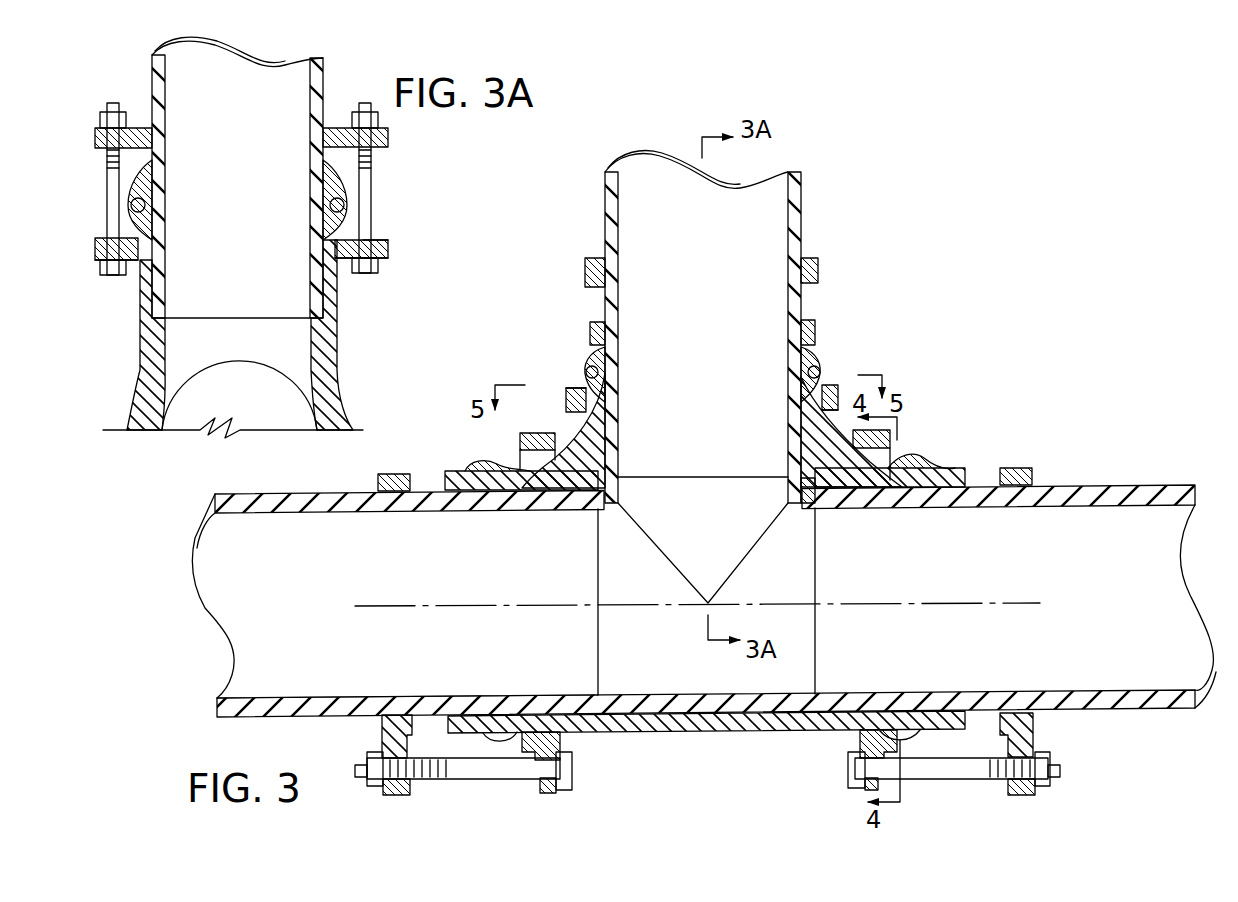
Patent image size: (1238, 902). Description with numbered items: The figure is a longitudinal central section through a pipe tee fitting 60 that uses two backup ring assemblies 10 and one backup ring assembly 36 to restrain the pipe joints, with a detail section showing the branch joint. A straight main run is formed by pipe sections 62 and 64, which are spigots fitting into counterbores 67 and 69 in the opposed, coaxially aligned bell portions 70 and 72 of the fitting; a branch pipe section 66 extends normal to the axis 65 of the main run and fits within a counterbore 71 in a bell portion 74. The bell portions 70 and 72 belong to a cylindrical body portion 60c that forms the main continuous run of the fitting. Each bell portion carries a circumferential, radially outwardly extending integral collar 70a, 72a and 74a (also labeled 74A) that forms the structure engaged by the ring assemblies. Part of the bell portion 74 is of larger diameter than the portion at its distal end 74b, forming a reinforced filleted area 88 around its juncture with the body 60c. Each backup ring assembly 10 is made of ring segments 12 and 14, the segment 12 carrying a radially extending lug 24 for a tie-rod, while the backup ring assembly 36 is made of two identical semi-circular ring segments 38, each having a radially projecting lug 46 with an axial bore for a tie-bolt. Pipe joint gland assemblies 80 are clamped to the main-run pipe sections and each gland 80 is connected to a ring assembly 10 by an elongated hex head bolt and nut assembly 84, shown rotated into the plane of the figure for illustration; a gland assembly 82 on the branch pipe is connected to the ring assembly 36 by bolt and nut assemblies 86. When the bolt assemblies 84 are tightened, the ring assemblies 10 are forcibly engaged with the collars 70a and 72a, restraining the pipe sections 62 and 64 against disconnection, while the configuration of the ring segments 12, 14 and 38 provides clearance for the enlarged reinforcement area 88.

In FIG. 3, the backup ring assembly 10 is at (713, 795).
In FIG. 3, the ring segment 12 is at (518, 446).
In FIG. 3, the ring segment 14 is at (565, 742).
In FIG. 3, the lug 24 is at (548, 792).
In FIG. 3, the backup ring assembly 36 is at (833, 383).
In FIG. 3A, the backup ring assembly 36 is at (95, 282).
In FIG. 3, the ring segment 38 is at (574, 388).
In FIG. 3A, the ring segment 38 is at (95, 265).
In FIG. 3A, the lug 46 is at (385, 242).
In FIG. 3, the tee fitting 60 is at (705, 581).
In FIG. 3A, the tee fitting 60 is at (200, 370).
In FIG. 3, the cylindrical body portion 60c is at (735, 738).
In FIG. 3A, the cylindrical body portion 60c is at (130, 404).
In FIG. 3, the pipe section 62 is at (255, 717).
In FIG. 3, the pipe section 64 is at (1110, 486).
In FIG. 3, the axis 65 is at (385, 606).
In FIG. 3A, the axis 65 is at (238, 432).
In FIG. 3, the pipe section 66 is at (802, 228).
In FIG. 3A, the pipe section 66 is at (325, 70).
In FIG. 3, the counterbore 67 is at (592, 505).
In FIG. 3, the counterbore 69 is at (845, 488).
In FIG. 3, the bell portion 70 is at (448, 478).
In FIG. 3, the collar 70a is at (468, 495).
In FIG. 3, the counterbore 71 is at (618, 434).
In FIG. 3A, the counterbore 71 is at (165, 292).
In FIG. 3, the bell portion 72 is at (935, 468).
In FIG. 3, the collar 72a is at (888, 490).
In FIG. 3, the bell portion 74 is at (590, 332).
In FIG. 3A, the bell portion 74 is at (340, 196).
In FIG. 3, the collar 74A is at (606, 335).
In FIG. 3, the collar 74a is at (815, 345).
In FIG. 3A, the collar 74a is at (126, 215).
In FIG. 3A, the distal end 74b is at (165, 170).
In FIG. 3, the gland assembly 80 is at (390, 796).
In FIG. 3, the gland assembly 82 is at (590, 258).
In FIG. 3A, the gland assembly 82 is at (135, 128).
In FIG. 3, the bolt and nut assembly 84 is at (490, 781).
In FIG. 3A, the bolt and nut assembly 86 is at (98, 222).
In FIG. 3, the reinforced filleted area 88 is at (566, 432).